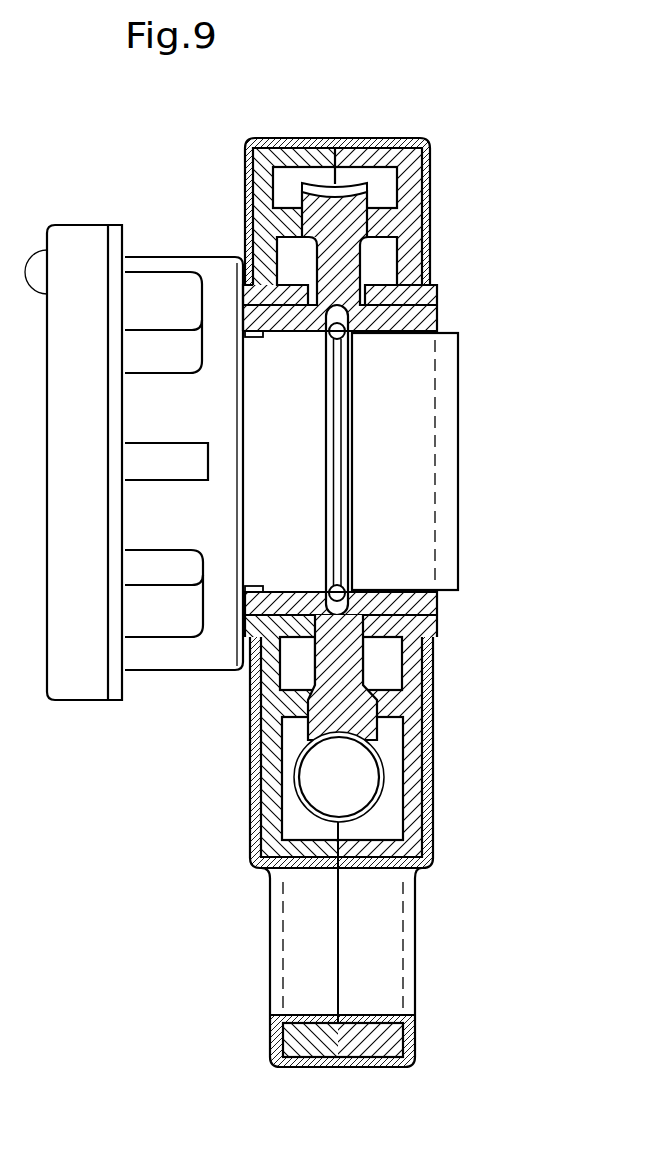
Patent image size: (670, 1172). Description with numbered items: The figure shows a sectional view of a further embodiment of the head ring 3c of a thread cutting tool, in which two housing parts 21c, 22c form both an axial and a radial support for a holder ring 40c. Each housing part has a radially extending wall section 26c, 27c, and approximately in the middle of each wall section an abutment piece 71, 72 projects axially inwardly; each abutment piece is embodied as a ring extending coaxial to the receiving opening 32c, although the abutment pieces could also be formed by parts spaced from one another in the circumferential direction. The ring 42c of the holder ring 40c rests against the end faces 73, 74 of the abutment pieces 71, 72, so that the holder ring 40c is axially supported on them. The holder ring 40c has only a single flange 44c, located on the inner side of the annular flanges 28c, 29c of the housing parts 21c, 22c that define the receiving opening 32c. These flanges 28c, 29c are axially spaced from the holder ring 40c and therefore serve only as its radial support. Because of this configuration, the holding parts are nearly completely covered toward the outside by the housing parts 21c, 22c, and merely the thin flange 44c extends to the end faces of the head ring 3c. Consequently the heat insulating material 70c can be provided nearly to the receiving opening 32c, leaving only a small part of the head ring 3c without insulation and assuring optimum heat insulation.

The head ring 3c is at (348, 223).
The end face of abutment piece 73 is at (362, 225).
The housing part 22c is at (296, 161).
The end face of abutment piece 74 is at (308, 225).
The ring of holder ring 42c is at (338, 218).
The housing part 21c is at (381, 159).
The heat insulating material 70c is at (248, 162).
The radially extending wall section 26c is at (413, 183).
The radially extending wall section 27c is at (263, 186).
The abutment piece 72 is at (290, 222).
The abutment piece 71 is at (380, 222).
The holder ring 40c is at (368, 263).
The flange 28c is at (390, 292).
The receiving opening 32c is at (427, 320).
The flange 29c is at (270, 308).
The flange of holder ring 44c is at (292, 322).